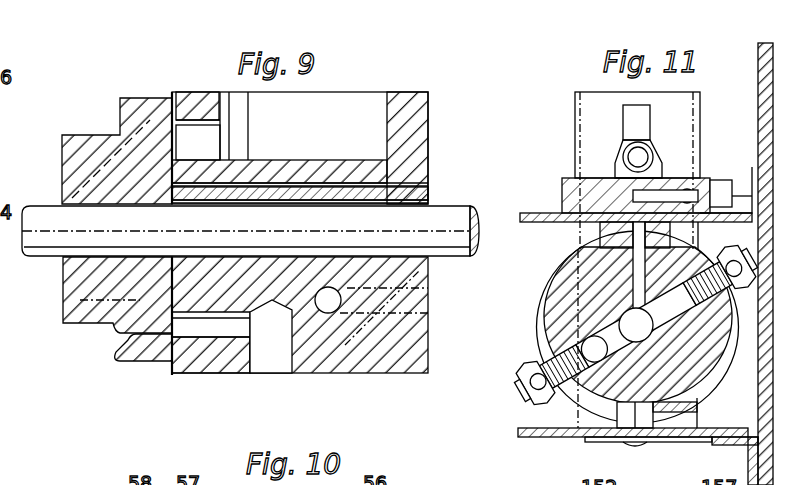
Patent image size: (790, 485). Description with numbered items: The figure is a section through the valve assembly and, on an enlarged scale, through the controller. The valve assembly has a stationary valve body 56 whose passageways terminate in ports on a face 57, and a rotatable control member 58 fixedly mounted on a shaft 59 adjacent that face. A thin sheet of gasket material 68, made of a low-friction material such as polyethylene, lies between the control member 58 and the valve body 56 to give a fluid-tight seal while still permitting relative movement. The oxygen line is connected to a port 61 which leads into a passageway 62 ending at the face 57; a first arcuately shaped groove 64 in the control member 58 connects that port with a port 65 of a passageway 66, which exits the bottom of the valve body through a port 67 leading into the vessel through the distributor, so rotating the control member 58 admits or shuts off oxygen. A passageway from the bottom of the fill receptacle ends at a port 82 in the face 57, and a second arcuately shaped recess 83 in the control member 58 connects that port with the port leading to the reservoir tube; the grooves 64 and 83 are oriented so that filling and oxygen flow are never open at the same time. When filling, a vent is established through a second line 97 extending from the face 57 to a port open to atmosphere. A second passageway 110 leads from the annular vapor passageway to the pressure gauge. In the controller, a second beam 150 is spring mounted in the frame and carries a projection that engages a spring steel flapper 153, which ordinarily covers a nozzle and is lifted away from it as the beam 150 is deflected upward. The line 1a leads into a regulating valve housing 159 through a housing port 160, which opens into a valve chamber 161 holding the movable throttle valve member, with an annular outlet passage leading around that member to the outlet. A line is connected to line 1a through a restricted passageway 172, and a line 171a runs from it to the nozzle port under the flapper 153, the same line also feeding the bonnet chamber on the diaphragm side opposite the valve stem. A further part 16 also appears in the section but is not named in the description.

In FIG. 9, the stationary valve body 56 is at (300, 134).
In FIG. 9, the face 57 is at (177, 108).
In FIG. 9, the port 82 is at (179, 124).
In FIG. 9, the port 61 is at (263, 188).
In FIG. 9, the second line 97 is at (418, 193).
In FIG. 9, the passageway 62 is at (260, 213).
In FIG. 9, the second arcuately shaped recess 83 is at (0, 176).
In FIG. 9, the shaft 59 is at (64, 258).
In FIG. 9, the rotatable control member 58 is at (116, 330).
In FIG. 9, the first arcuately shaped groove 64 is at (118, 358).
In FIG. 9, the port 65 is at (132, 361).
In FIG. 9, the gasket material 68 is at (170, 375).
In FIG. 9, the passageway 66 is at (222, 328).
In FIG. 9, the port 67 is at (270, 373).
In FIG. 9, the second passageway 110 is at (327, 313).
In FIG. 11, the second beam 150 is at (578, 117).
In FIG. 11, the line 171a is at (690, 193).
In FIG. 11, the flapper 153 is at (726, 186).
In FIG. 11, the restricted passageway 172 is at (633, 233).
In FIG. 11, the valve chamber 161 is at (628, 324).
In FIG. 11, the regulating valve housing 159 is at (540, 351).
In FIG. 11, the housing port 160 is at (735, 300).
In FIG. 11, the line 1a is at (731, 266).
In FIG. 11, the bolt 16 is at (520, 392).